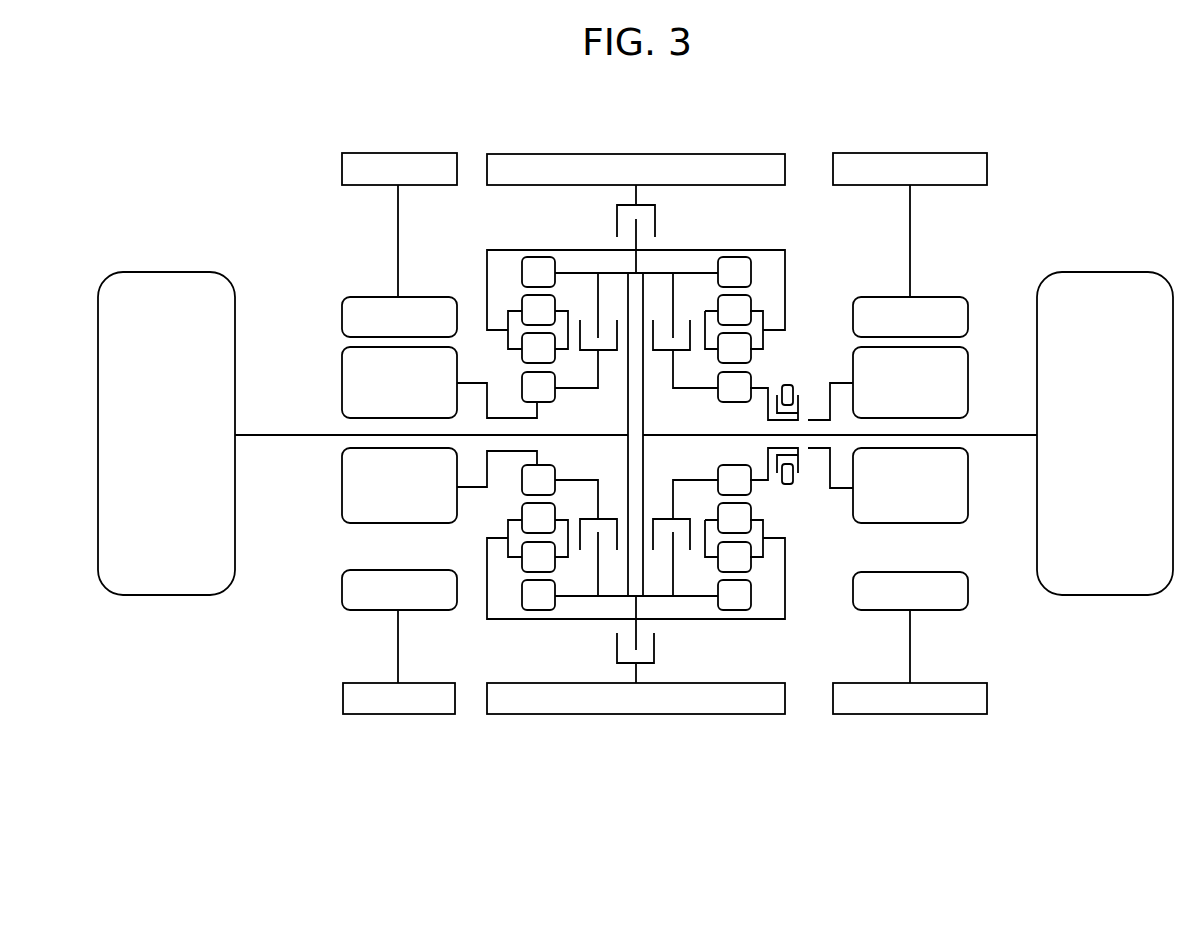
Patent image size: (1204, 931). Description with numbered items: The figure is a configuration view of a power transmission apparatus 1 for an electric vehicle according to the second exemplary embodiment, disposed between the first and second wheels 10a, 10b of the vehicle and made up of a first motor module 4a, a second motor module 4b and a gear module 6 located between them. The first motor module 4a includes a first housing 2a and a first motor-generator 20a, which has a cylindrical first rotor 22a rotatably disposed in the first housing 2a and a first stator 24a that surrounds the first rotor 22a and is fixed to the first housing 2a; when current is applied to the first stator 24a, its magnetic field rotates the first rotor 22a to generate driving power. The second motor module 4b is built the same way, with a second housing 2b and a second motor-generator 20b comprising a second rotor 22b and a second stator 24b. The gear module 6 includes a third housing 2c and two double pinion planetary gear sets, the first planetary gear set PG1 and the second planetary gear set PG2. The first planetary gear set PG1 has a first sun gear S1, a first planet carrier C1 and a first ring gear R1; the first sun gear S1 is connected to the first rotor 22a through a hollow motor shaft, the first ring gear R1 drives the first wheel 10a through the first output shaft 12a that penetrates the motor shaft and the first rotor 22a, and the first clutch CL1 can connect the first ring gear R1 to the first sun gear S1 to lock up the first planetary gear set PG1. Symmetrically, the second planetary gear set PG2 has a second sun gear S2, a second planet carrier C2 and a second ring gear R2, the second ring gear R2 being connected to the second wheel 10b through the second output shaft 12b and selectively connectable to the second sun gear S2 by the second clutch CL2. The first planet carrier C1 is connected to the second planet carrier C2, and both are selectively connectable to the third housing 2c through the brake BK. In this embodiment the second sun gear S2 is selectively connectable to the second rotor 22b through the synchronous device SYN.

The power transmission apparatus 1 is at (630, 100).
The first housing 2a is at (398, 153).
The second housing 2b is at (910, 153).
The third housing 2c is at (722, 154).
The first motor module 4a is at (403, 718).
The second motor module 4b is at (921, 718).
The gear module 6 is at (640, 718).
The first wheel 10a is at (165, 272).
The second wheel 10b is at (1105, 272).
The first output shaft 12a is at (282, 435).
The second output shaft 12b is at (1003, 435).
The first motor-generator 20a is at (338, 294).
The second motor-generator 20b is at (972, 294).
The first rotor 22a is at (342, 487).
The second rotor 22b is at (968, 487).
The first stator 24a is at (342, 592).
The second stator 24b is at (968, 593).
The first planetary gear set PG1 is at (636, 518).
The second planetary gear set PG2 is at (747, 521).
The first clutch CL1 is at (610, 312).
The second clutch CL2 is at (660, 312).
The brake BK is at (656, 666).
The synchronous device SYN is at (797, 490).
The first ring gear R1 is at (538, 434).
The first planet carrier C1 is at (538, 434).
The first sun gear S1 is at (538, 434).
The second ring gear R2 is at (734, 434).
The second planet carrier C2 is at (734, 434).
The second sun gear S2 is at (734, 434).